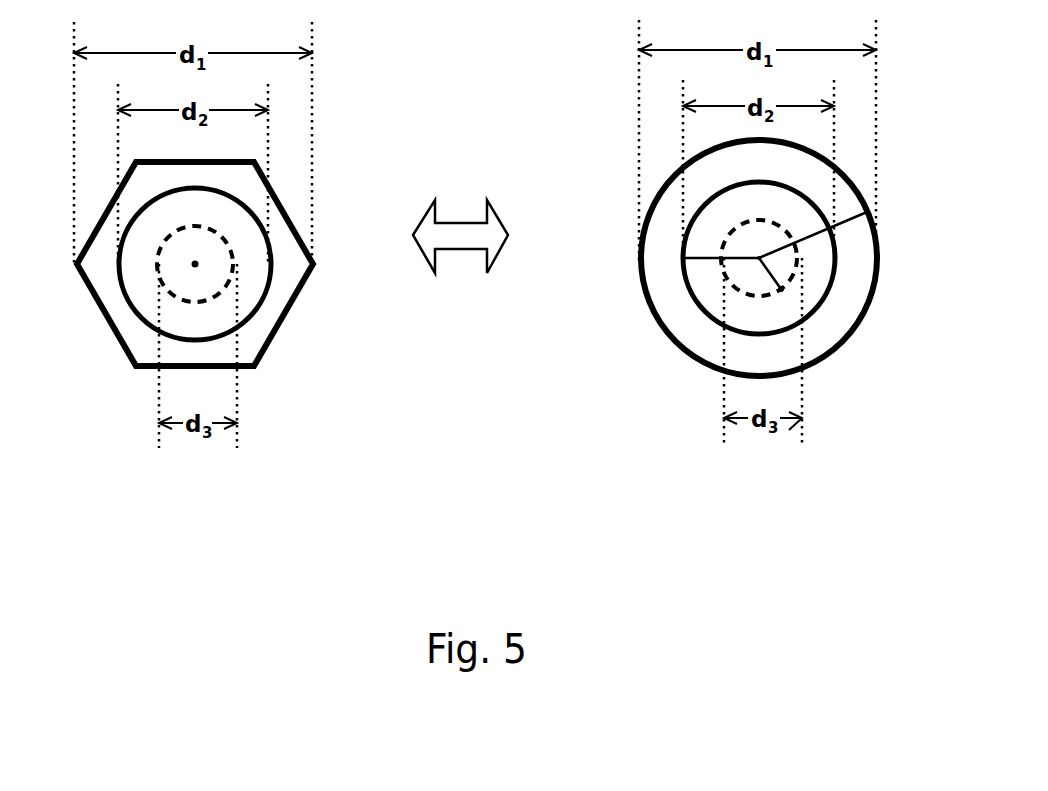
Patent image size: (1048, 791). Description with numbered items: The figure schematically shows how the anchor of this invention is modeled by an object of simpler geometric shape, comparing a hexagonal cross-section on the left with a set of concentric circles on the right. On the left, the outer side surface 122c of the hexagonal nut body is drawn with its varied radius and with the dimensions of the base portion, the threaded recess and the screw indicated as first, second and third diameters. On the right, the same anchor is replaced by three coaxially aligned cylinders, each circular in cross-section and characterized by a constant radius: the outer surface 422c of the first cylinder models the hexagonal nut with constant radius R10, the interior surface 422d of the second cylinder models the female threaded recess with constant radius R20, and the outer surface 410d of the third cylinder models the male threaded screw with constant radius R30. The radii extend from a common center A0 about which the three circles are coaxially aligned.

The outer side surface 122c is at (287, 317).
The outer surface of the first cylinder 422c is at (680, 345).
The interior surface of the second cylinder 422d is at (803, 312).
The outer surface of the third cylinder 410d is at (752, 296).
The constant radius of the first cylinder outer surface R10 is at (867, 212).
The constant radius of the second cylinder interior surface R20 is at (692, 258).
The constant radius of the third cylinder outer surface R30 is at (766, 266).
The center axis A0 is at (759, 258).